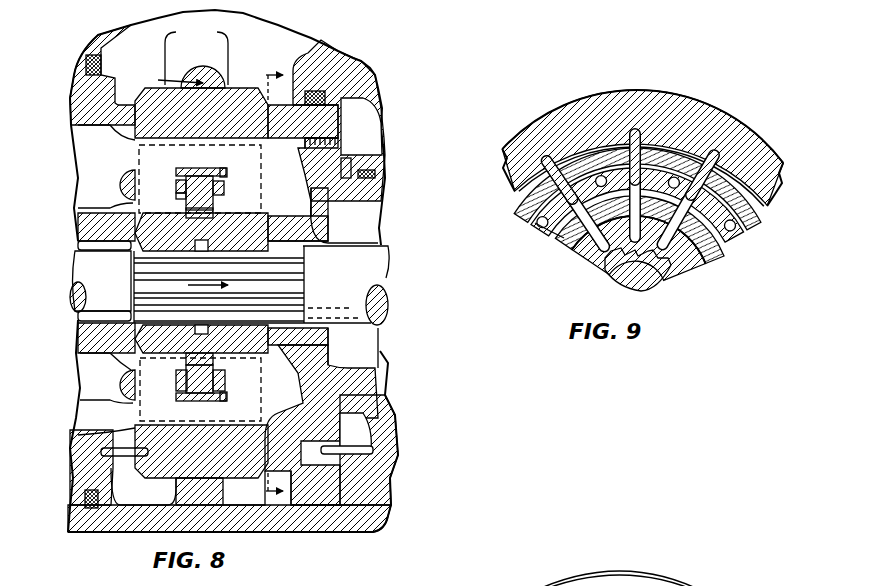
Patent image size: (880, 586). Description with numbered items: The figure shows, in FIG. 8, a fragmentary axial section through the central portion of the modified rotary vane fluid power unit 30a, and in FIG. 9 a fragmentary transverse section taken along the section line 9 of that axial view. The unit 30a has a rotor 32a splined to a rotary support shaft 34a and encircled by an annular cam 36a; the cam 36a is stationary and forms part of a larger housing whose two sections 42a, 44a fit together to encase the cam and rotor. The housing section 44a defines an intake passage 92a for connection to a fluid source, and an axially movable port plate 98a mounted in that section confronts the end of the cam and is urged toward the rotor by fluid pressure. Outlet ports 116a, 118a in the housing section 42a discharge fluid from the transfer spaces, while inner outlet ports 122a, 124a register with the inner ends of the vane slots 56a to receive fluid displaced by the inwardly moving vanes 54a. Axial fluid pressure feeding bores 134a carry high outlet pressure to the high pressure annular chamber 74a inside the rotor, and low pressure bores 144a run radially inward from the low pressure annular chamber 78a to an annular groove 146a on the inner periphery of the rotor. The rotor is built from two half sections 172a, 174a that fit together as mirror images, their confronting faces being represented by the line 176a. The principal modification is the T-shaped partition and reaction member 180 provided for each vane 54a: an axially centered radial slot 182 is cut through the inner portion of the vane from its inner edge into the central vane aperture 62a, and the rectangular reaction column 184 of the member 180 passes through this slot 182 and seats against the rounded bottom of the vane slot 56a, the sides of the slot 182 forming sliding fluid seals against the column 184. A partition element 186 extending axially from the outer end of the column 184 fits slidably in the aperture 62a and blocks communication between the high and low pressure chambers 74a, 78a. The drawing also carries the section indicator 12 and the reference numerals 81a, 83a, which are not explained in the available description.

In FIG. 8, the section line 9 is at (185, 180).
In FIG. 8, the section line of FIG. 12 is at (262, 281).
In FIG. 8, the rotary vane fluid power unit 30a is at (360, 52).
In FIG. 8, the rotor 32a is at (122, 219).
In FIG. 9, the rotor 32a is at (713, 253).
In FIG. 8, the rotary support shaft 34a is at (353, 267).
In FIG. 9, the rotary support shaft 34a is at (633, 277).
In FIG. 8, the annular cam 36a is at (173, 450).
In FIG. 9, the annular cam 36a is at (543, 118).
In FIG. 8, the housing section 42a is at (82, 459).
In FIG. 8, the housing section 44a is at (360, 502).
In FIG. 8, the vane 54a is at (140, 152).
In FIG. 9, the vane 54a is at (630, 136).
In FIG. 9, the vane slot 56a is at (580, 222).
In FIG. 8, the central vane aperture 62a is at (222, 193).
In FIG. 8, the high pressure annular chamber 74a is at (190, 162).
In FIG. 9, the high pressure annular chamber 74a is at (527, 217).
In FIG. 8, the low pressure annular chamber 78a is at (177, 187).
In FIG. 9, the low pressure annular chamber 78a is at (542, 223).
In FIG. 8, the pin end 81a is at (218, 163).
In FIG. 8, the spring washer 83a is at (177, 181).
In FIG. 8, the intake passage 92a is at (270, 40).
In FIG. 8, the port plate 98a is at (317, 113).
In FIG. 8, the outlet port 116a is at (95, 394).
In FIG. 8, the outlet port 118a is at (107, 157).
In FIG. 8, the inner outlet port 122a is at (95, 363).
In FIG. 8, the inner outlet port 124a is at (110, 197).
In FIG. 9, the fluid pressure feeding bore 134a is at (537, 210).
In FIG. 9, the low pressure bore 144a is at (590, 246).
In FIG. 8, the annular groove 146a is at (200, 235).
In FIG. 8, the rotor half section 172a is at (165, 333).
In FIG. 8, the rotor half section 174a is at (270, 329).
In FIG. 8, the confronting faces line 176a is at (193, 321).
In FIG. 8, the T-shaped partition and reaction member 180 is at (217, 382).
In FIG. 8, the radial slot 182 is at (180, 212).
In FIG. 9, the reaction column 184 is at (670, 225).
In FIG. 8, the partition element 186 is at (180, 390).